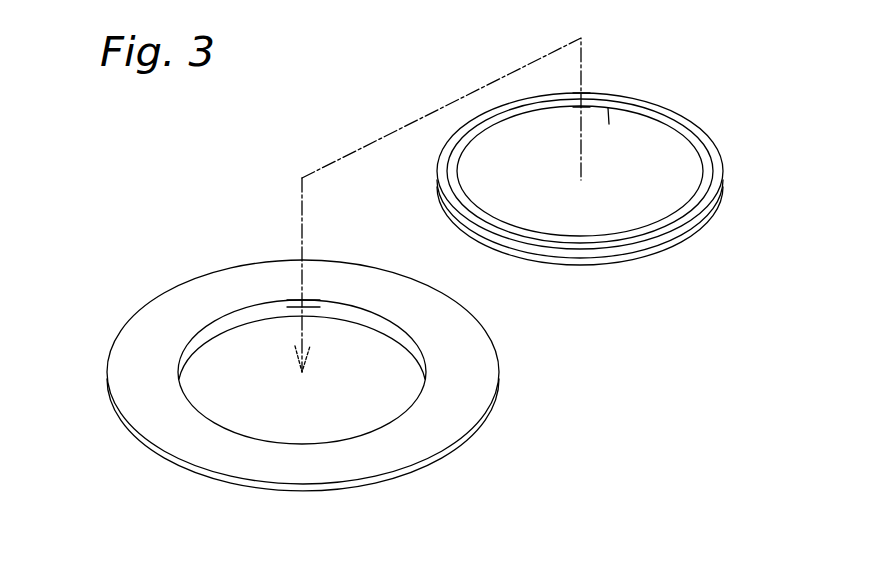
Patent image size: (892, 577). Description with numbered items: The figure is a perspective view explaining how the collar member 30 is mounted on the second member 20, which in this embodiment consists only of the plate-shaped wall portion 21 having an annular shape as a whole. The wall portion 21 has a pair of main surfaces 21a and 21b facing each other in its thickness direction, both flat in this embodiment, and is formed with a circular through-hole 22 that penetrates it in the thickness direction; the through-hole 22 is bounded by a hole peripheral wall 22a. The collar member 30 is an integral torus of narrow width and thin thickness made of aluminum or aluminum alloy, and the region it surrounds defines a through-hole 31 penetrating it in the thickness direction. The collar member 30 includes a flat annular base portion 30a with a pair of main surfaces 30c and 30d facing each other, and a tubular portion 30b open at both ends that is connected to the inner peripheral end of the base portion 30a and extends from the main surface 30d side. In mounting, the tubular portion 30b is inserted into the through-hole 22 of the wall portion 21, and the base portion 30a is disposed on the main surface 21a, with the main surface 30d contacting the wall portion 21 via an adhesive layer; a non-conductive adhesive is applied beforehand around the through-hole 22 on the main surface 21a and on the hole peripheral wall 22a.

The second member 20 is at (376, 307).
The wall portion 21 is at (376, 307).
The main surface 21a is at (453, 398).
The main surface 21b is at (418, 445).
The through-hole 22 is at (237, 335).
The hole peripheral wall 22a is at (279, 303).
The collar member 30 is at (604, 172).
The base portion 30a is at (723, 193).
The tubular portion 30b is at (637, 232).
The main surface 30c is at (651, 258).
The main surface 30d is at (704, 226).
The through-hole 31 is at (608, 118).